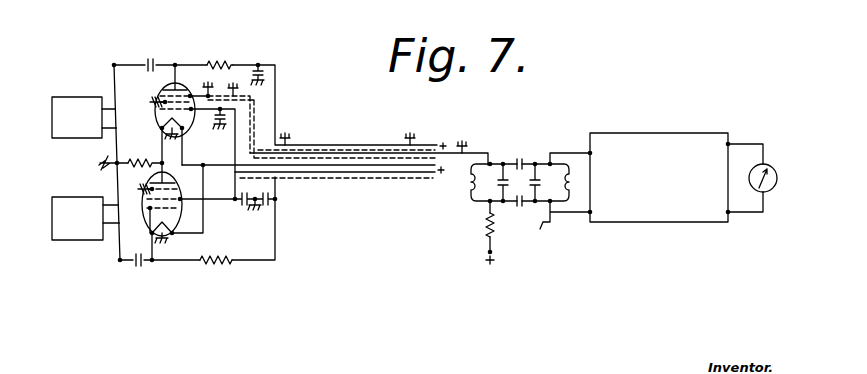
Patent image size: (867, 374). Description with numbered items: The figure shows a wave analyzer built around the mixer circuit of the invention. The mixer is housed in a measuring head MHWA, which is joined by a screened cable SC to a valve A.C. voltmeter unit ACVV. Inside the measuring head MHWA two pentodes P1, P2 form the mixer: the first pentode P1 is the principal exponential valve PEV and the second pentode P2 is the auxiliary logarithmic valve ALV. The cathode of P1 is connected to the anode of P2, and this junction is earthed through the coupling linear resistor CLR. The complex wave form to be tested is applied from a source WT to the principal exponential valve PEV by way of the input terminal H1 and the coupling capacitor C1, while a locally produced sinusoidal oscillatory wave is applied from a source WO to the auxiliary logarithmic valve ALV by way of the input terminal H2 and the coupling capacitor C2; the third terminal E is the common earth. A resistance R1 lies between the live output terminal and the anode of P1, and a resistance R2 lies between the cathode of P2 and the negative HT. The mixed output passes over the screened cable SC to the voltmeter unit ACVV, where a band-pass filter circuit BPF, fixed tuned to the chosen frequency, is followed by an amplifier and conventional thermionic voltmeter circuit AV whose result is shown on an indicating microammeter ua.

The input terminal H1 is at (117, 69).
The coupling capacitor C1 is at (176, 56).
The resistance R1 is at (322, 94).
The source WT is at (84, 117).
The principal exponential valve PEV is at (137, 96).
The coupling linear resistor CLR is at (143, 156).
The pentode P1 is at (178, 115).
The input terminal E is at (106, 164).
The pentode P2 is at (171, 211).
The source WO is at (86, 218).
The auxiliary logarithmic valve ALV is at (136, 211).
The input terminal H2 is at (114, 264).
The coupling capacitor C2 is at (163, 273).
The resistance R2 is at (237, 233).
The measuring head MHWA is at (177, 338).
The screened cable SC is at (335, 151).
The band-pass filter circuit BPF is at (530, 194).
The amplifier and thermionic voltmeter circuit AV is at (659, 177).
The indicating microammeter ua is at (764, 178).
The valve A.C. voltmeter unit ACVV is at (628, 353).